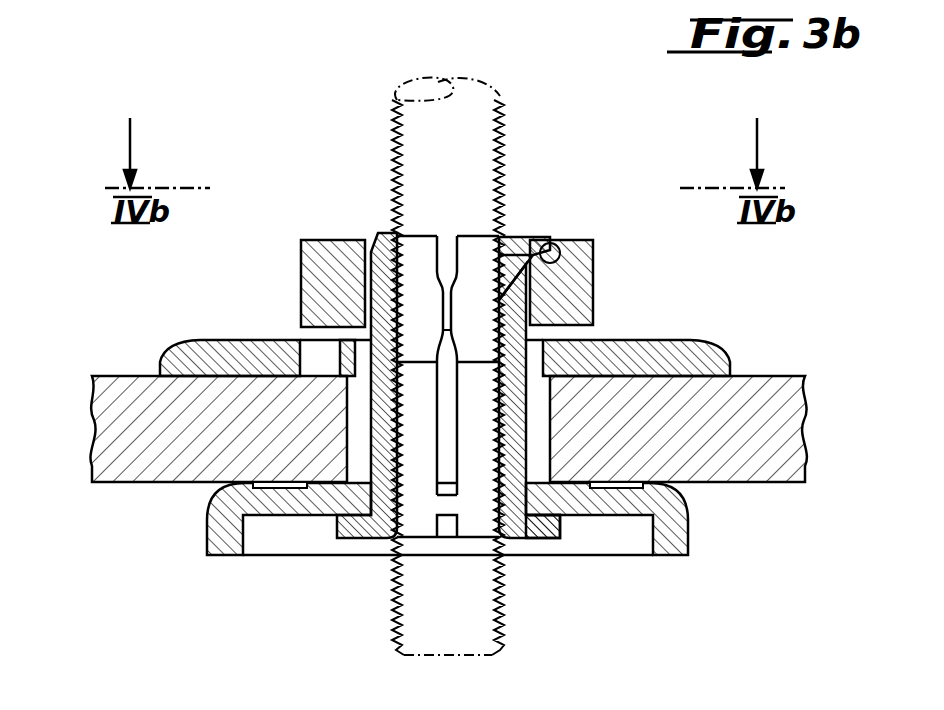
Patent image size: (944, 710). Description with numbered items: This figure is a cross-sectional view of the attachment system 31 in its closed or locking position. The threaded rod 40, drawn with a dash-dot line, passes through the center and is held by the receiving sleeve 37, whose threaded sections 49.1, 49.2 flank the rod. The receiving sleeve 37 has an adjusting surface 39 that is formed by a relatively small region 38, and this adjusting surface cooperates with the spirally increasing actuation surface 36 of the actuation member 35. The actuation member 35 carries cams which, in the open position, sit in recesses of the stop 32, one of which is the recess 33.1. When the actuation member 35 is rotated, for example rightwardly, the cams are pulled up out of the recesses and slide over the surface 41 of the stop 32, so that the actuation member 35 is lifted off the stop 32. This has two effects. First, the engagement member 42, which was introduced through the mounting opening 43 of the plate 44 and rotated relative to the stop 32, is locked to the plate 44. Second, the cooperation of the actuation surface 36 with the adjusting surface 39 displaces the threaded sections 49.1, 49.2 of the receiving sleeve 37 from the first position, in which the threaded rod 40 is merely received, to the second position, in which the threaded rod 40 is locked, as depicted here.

The attachment system 31 is at (328, 130).
The stop 32 is at (735, 338).
The recess 33.1 is at (310, 368).
The actuation member 35 is at (313, 228).
The actuation surface 36 is at (550, 258).
The receiving sleeve 37 is at (540, 428).
The region 38 is at (527, 236).
The adjusting surface 39 is at (543, 282).
The threaded rod 40 is at (512, 118).
The surface 41 is at (668, 334).
The engagement member 42 is at (224, 527).
The mounting opening 43 is at (542, 467).
The plate 44 is at (767, 474).
The threaded section 49.1 is at (412, 310).
The threaded section 49.2 is at (497, 318).